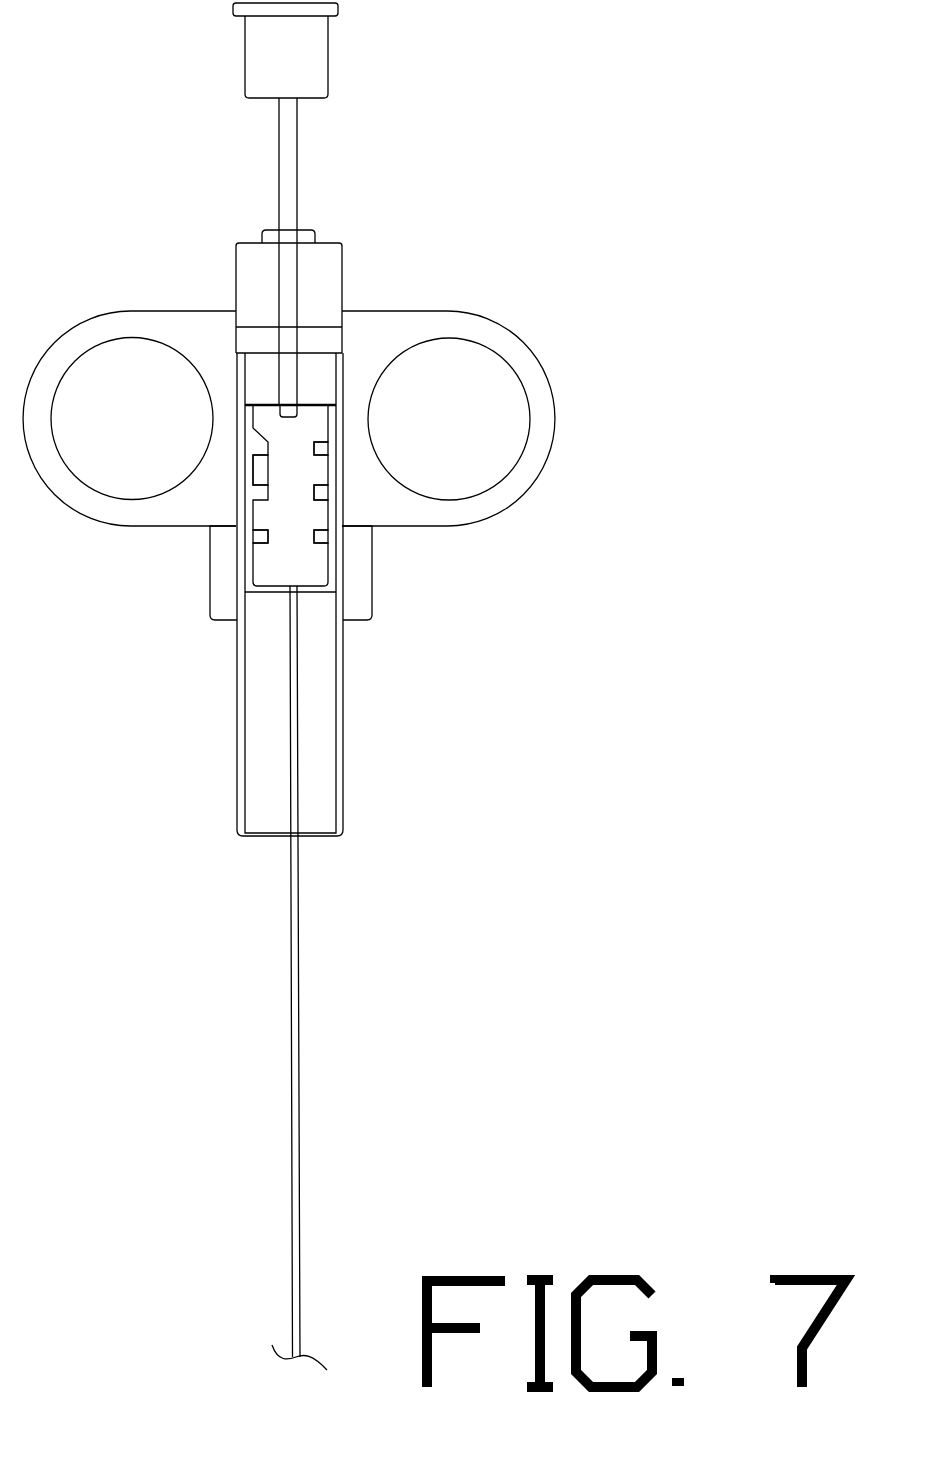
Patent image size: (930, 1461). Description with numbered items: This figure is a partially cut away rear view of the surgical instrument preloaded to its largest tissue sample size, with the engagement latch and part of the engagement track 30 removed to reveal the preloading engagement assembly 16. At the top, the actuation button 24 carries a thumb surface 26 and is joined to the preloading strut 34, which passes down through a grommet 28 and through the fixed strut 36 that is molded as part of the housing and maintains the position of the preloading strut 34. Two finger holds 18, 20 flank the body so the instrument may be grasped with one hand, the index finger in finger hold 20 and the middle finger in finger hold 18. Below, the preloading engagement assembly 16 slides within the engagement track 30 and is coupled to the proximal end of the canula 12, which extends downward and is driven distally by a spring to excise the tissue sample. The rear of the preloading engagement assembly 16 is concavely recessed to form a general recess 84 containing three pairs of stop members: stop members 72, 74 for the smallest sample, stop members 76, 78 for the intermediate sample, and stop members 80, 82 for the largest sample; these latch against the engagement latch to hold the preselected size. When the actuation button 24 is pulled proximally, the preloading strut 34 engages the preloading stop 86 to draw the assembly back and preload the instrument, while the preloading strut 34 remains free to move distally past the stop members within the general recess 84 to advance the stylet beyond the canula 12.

The canula 12 is at (344, 978).
The preloading engagement assembly 16 is at (326, 573).
The finger hold 18 is at (448, 405).
The finger hold 20 is at (129, 405).
The actuation button 24 is at (314, 57).
The thumb surface 26 is at (311, 25).
The grommet 28 is at (315, 220).
The engagement track 30 is at (324, 594).
The preloading strut 34 is at (314, 251).
The fixed strut 36 is at (323, 298).
The stop member 72 is at (281, 425).
The stop member 74 is at (302, 441).
The stop member 76 is at (283, 469).
The stop member 78 is at (298, 486).
The stop member 80 is at (287, 526).
The stop member 82 is at (299, 548).
The general recess 84 is at (246, 495).
The preloading stop 86 is at (247, 337).